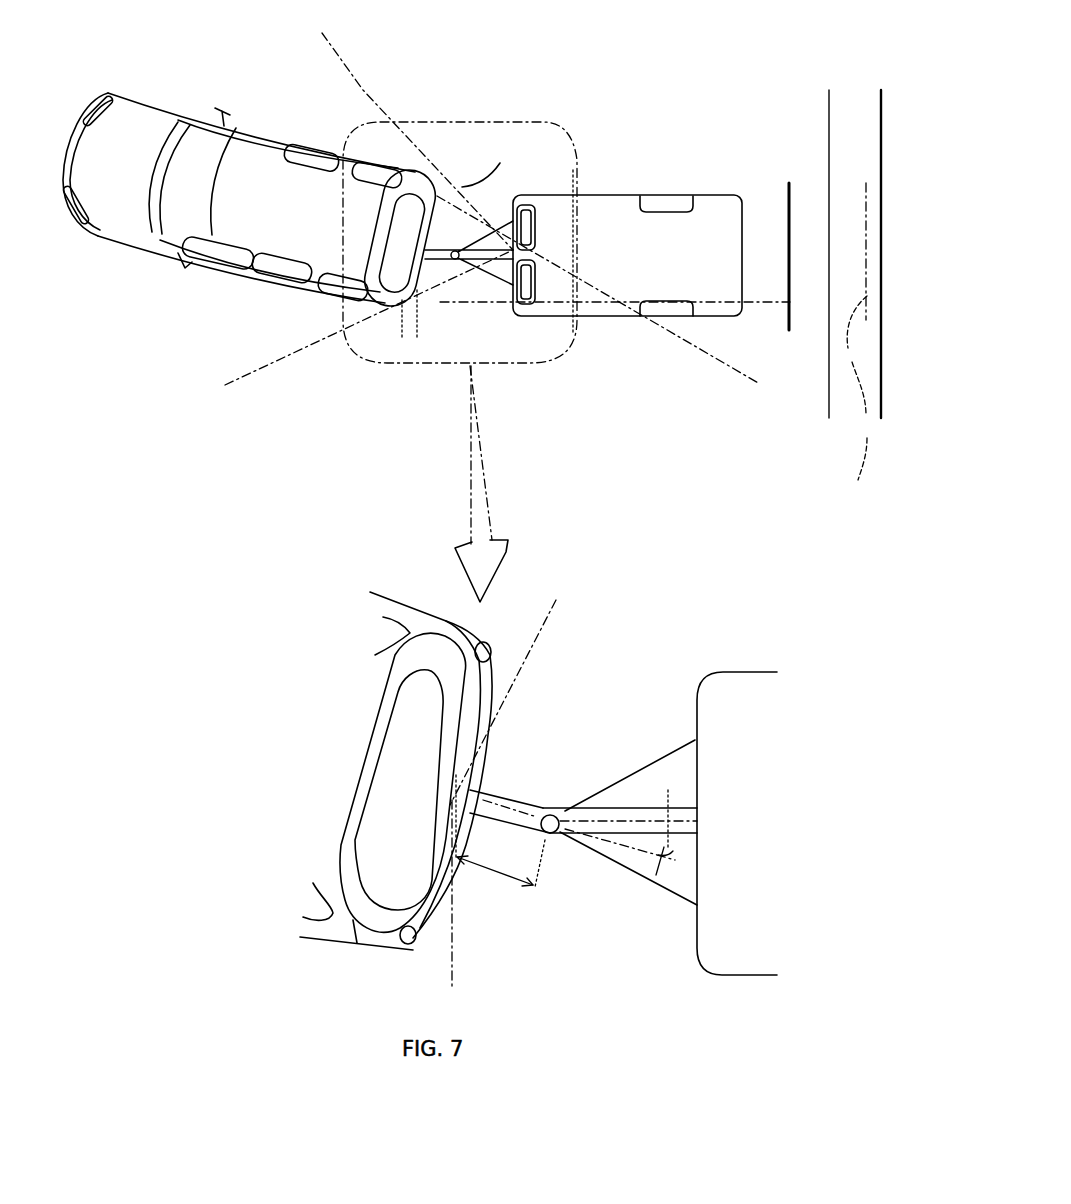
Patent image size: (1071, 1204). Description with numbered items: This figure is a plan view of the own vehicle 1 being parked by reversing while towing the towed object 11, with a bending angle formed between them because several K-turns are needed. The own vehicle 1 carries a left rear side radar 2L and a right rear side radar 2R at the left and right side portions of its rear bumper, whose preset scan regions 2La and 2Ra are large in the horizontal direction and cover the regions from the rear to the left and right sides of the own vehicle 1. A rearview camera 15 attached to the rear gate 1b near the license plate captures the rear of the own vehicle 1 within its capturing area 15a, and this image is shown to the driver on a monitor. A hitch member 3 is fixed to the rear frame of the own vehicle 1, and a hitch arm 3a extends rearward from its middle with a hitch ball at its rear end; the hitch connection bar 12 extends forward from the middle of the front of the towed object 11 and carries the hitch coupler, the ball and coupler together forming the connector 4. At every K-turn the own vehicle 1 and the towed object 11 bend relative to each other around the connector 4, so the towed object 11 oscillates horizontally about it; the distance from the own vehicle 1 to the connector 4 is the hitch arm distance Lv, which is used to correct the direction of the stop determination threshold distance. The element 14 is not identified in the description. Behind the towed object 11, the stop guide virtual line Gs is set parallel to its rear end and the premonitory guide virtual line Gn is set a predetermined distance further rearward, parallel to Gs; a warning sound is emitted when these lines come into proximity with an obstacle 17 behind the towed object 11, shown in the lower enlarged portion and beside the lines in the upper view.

The own vehicle 1 is at (123, 252).
The rear gate 1b is at (390, 830).
The right rear side radar 2R is at (462, 185).
The left rear side radar 2L is at (340, 315).
The scan region 2Ra is at (316, 58).
The scan region 2La is at (253, 368).
The hitch member 3 is at (514, 770).
The hitch arm 3a is at (520, 805).
The connector 4 is at (547, 812).
The towed object 11 is at (701, 183).
The hitch connection bar 12 is at (633, 812).
The sensor 14 is at (458, 263).
The rearview camera 15 is at (463, 800).
The capturing area 15a is at (500, 150).
The obstacle 17 is at (881, 100).
The stop guide virtual line Gs is at (798, 213).
The premonitory guide virtual line Gn is at (861, 401).
The hitch arm distance Lv is at (500, 831).